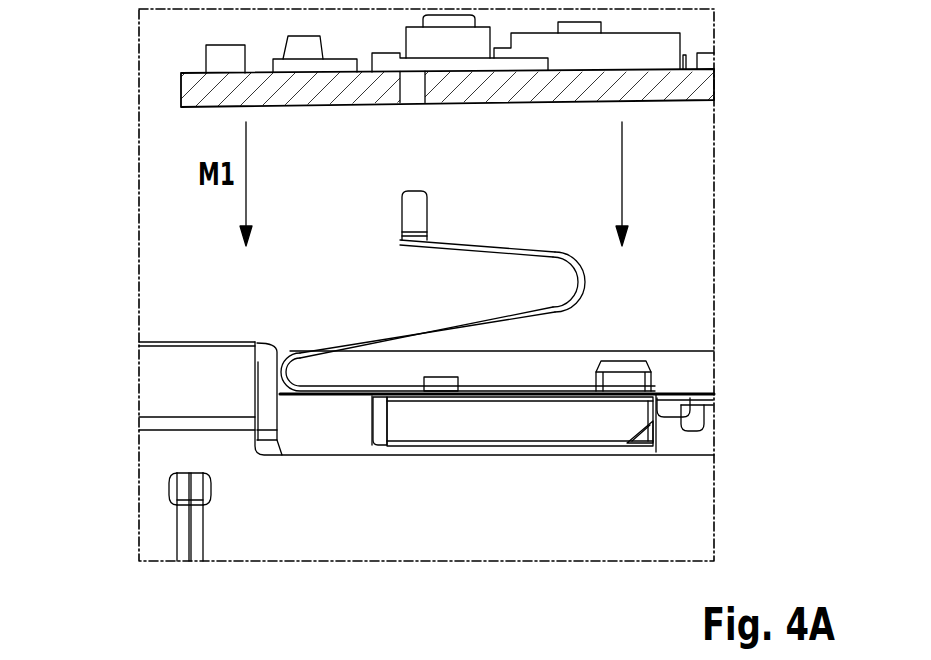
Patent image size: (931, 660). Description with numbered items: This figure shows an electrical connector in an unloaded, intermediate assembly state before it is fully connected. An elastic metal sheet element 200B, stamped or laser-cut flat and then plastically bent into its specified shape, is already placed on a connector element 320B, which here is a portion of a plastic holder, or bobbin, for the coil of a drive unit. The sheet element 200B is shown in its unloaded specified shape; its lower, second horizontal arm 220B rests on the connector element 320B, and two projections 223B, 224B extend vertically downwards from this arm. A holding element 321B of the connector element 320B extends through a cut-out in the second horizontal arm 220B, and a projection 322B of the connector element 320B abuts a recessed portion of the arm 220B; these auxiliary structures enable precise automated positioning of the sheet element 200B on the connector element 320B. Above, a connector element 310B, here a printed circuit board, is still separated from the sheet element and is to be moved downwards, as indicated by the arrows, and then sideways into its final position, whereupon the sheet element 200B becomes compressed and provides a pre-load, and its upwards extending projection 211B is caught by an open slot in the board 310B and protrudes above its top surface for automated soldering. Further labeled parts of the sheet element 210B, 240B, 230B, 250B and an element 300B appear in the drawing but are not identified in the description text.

The connector element 310B is at (688, 83).
The upwards extending projection 211B is at (413, 213).
The upper spring arm 210B is at (507, 242).
The spring bend 240B is at (586, 286).
The elastic metal sheet element 200B is at (435, 278).
The lower spring arm 230B is at (437, 325).
The spring loop fixing section 250B is at (290, 375).
The second horizontal arm 220B is at (325, 395).
The connector element 320B is at (573, 430).
The projection 322B is at (433, 388).
The holding element 321B is at (637, 377).
The projection 223B is at (677, 403).
The projection 224B is at (690, 420).
The pin 300B is at (165, 518).